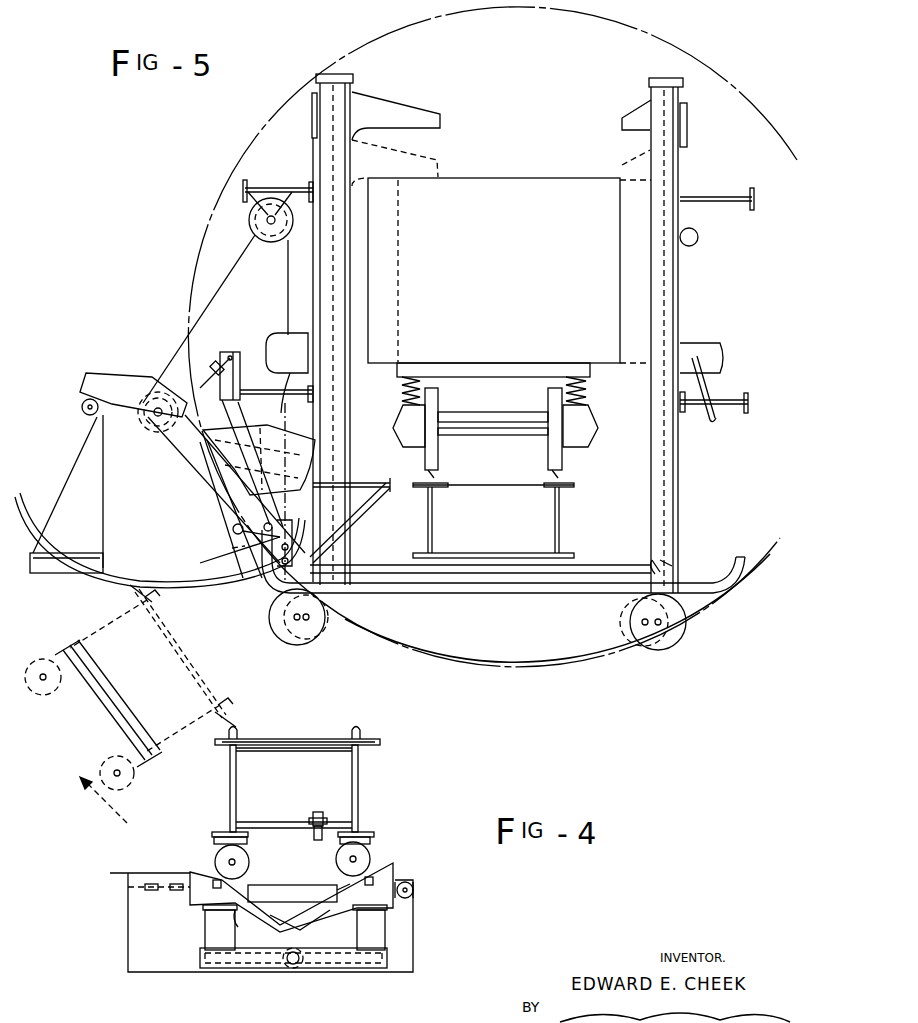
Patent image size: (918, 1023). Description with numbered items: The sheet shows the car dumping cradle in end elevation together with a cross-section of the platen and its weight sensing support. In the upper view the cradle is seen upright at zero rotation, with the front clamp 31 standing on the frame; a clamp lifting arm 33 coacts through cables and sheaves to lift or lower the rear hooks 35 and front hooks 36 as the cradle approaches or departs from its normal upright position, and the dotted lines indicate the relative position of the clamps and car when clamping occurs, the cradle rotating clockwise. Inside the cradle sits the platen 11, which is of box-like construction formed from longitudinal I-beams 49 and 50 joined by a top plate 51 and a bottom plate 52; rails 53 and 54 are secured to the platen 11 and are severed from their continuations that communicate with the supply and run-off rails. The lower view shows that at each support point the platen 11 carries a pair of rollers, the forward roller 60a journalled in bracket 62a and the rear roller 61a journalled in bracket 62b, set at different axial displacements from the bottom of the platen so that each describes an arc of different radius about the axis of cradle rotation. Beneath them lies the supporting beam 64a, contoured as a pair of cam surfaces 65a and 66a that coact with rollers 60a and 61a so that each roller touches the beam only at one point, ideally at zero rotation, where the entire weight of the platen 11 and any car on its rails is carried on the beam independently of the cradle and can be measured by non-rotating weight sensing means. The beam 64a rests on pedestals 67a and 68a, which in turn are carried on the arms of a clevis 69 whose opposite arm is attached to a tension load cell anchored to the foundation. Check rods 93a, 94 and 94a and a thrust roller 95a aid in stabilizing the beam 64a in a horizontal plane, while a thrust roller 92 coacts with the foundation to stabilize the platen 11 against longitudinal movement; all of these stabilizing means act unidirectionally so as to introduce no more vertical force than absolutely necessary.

In FIG. 5, the front clamp 31 is at (340, 74).
In FIG. 5, the rear hook 35 is at (393, 130).
In FIG. 5, the front hook 36 is at (632, 132).
In FIG. 5, the clamp lifting arm 33 is at (130, 374).
In FIG. 5, the platen 11 is at (487, 480).
In FIG. 4, the platen 11 is at (283, 733).
In FIG. 4, the longitudinal I-beam 49 is at (229, 773).
In FIG. 4, the longitudinal I-beam 50 is at (359, 779).
In FIG. 4, the top plate 51 is at (288, 747).
In FIG. 4, the bottom plate 52 is at (290, 820).
In FIG. 4, the rail 53 is at (233, 729).
In FIG. 4, the rail 54 is at (357, 729).
In FIG. 4, the thrust roller 92 is at (335, 795).
In FIG. 4, the bracket 62a is at (216, 842).
In FIG. 4, the bracket 62b is at (366, 837).
In FIG. 4, the forward roller 60a is at (243, 857).
In FIG. 4, the rear roller 61a is at (367, 855).
In FIG. 4, the cam surface 65a is at (246, 890).
In FIG. 4, the cam surface 66a is at (343, 884).
In FIG. 4, the check rod 94 is at (388, 868).
In FIG. 4, the check rod 94a is at (238, 924).
In FIG. 4, the supporting beam 64a is at (305, 920).
In FIG. 4, the check rod 93a is at (146, 882).
In FIG. 4, the thrust roller 95a is at (416, 890).
In FIG. 4, the pedestal 67a is at (205, 926).
In FIG. 4, the pedestal 68a is at (382, 925).
In FIG. 4, the clevis 69 is at (254, 970).